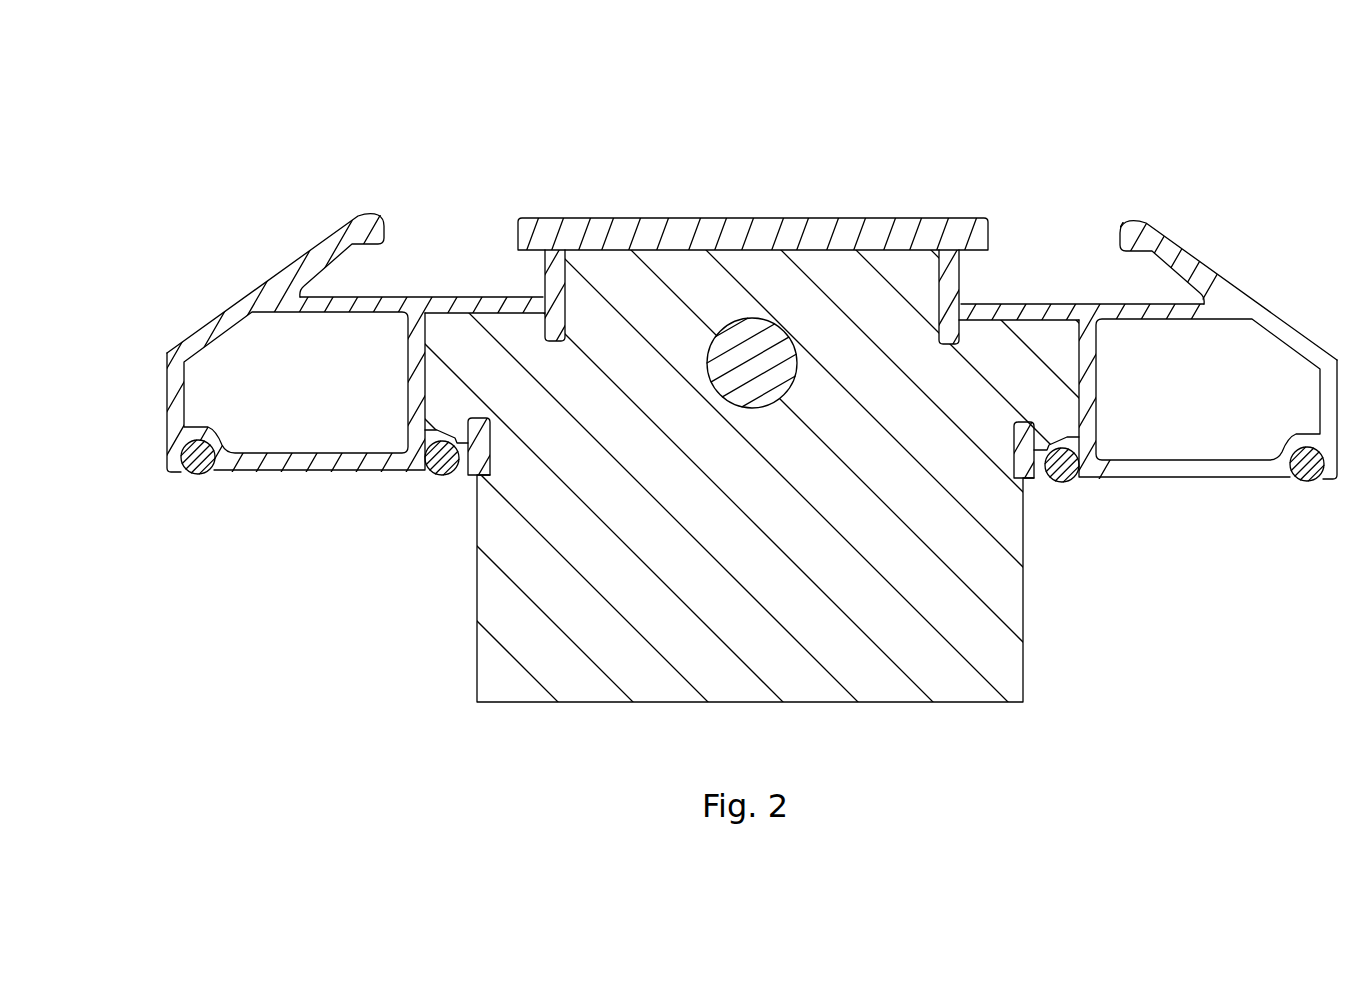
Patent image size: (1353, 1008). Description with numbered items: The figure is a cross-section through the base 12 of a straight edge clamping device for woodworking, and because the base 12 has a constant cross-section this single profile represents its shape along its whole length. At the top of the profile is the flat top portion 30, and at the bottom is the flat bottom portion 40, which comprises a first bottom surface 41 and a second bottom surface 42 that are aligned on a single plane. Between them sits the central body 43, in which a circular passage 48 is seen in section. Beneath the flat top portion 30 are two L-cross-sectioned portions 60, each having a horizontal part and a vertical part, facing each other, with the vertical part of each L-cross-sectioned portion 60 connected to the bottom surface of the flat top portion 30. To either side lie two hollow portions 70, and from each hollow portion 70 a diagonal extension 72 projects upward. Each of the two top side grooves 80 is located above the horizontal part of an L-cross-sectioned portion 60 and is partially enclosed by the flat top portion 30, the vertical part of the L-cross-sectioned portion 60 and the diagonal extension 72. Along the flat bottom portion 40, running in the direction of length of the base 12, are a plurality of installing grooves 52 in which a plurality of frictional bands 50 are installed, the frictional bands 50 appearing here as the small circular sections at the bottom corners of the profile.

The base 12 is at (1204, 128).
The flat top portion 30 is at (668, 223).
The flat bottom portion 40 is at (670, 390).
The first bottom surface 41 is at (277, 482).
The second bottom surface 42 is at (1163, 482).
The core block 43 is at (704, 440).
The conduit 48 is at (780, 332).
The frictional band 50 is at (193, 480).
The installing groove 52 is at (172, 485).
The L-cross-sectioned portion 60 is at (540, 292).
The hollow portion 70 is at (247, 348).
The diagonal extension 72 is at (380, 210).
The top side groove 80 is at (437, 224).